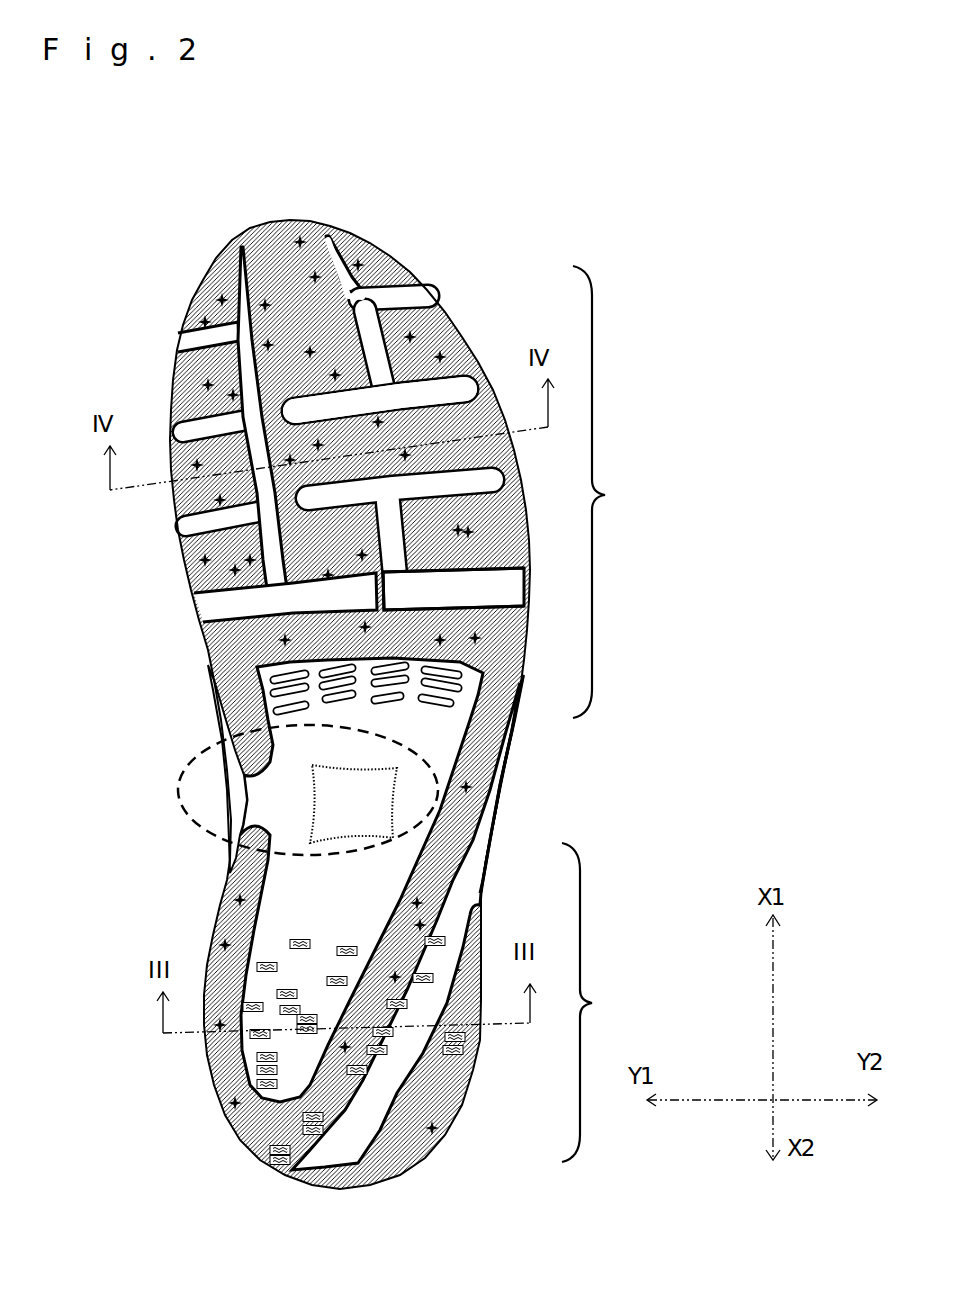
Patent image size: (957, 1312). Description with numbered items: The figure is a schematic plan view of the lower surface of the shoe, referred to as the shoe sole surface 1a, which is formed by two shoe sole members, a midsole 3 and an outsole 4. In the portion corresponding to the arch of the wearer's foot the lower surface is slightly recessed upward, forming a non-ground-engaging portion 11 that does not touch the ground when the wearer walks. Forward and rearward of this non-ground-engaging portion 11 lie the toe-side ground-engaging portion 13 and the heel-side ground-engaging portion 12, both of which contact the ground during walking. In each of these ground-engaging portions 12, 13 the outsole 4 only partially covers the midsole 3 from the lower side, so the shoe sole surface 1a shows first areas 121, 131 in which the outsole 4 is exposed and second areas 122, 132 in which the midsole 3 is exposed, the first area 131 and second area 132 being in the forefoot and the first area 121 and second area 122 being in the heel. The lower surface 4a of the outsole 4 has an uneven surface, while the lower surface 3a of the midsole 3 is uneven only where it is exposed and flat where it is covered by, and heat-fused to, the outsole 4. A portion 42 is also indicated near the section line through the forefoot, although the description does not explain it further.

The shoe sole surface 1a is at (547, 185).
The midsole 3 is at (413, 300).
The outsole 4 is at (407, 263).
The first area 131 is at (442, 338).
The second area 132 is at (454, 377).
The land portion along section IV 42 is at (343, 434).
The toe-side ground-engaging portion 13 is at (410, 482).
The lower surface of the outsole 4a is at (175, 538).
The lower surface of the midsole 3a is at (233, 607).
The non-ground-engaging portion 11 is at (178, 781).
The second area 122 is at (278, 908).
The first area 121 is at (227, 918).
The heel-side ground-engaging portion 12 is at (415, 915).